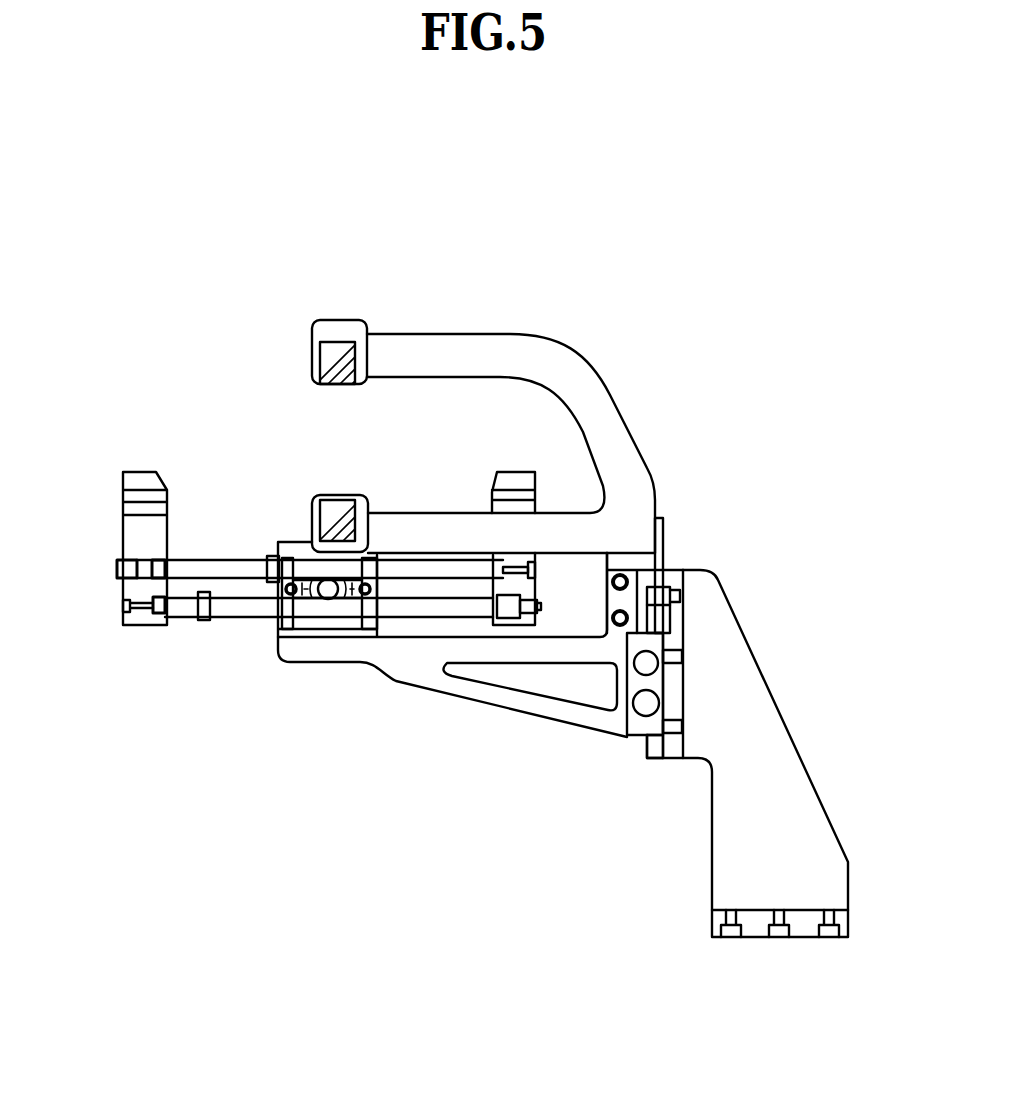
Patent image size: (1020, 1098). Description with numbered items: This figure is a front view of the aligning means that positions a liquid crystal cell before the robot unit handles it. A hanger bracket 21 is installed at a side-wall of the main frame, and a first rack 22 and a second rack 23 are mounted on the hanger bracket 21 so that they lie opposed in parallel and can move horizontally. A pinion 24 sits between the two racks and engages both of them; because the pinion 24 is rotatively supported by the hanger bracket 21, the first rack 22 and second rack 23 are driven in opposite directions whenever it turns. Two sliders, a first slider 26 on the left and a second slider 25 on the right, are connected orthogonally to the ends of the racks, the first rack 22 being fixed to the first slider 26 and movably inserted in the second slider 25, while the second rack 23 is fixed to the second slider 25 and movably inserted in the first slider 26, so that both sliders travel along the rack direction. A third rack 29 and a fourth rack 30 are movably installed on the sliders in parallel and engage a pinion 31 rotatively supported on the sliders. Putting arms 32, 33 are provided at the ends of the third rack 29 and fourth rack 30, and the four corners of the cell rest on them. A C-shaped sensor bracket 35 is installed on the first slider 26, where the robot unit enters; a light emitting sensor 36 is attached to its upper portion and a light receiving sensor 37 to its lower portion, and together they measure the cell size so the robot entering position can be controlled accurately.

The hanger bracket 21 is at (808, 803).
The first rack 22 is at (640, 662).
The second rack 23 is at (643, 710).
The pinion 24 is at (584, 736).
The second slider 25 is at (452, 727).
The first slider 26 is at (530, 686).
The third rack 29 is at (207, 567).
The fourth rack 30 is at (237, 612).
The pinion 31 is at (322, 600).
The putting arm 32 is at (128, 542).
The putting arm 33 is at (510, 480).
The sensor bracket 35 is at (618, 437).
The light emitting sensor 36 is at (318, 373).
The light receiving sensor 37 is at (313, 532).